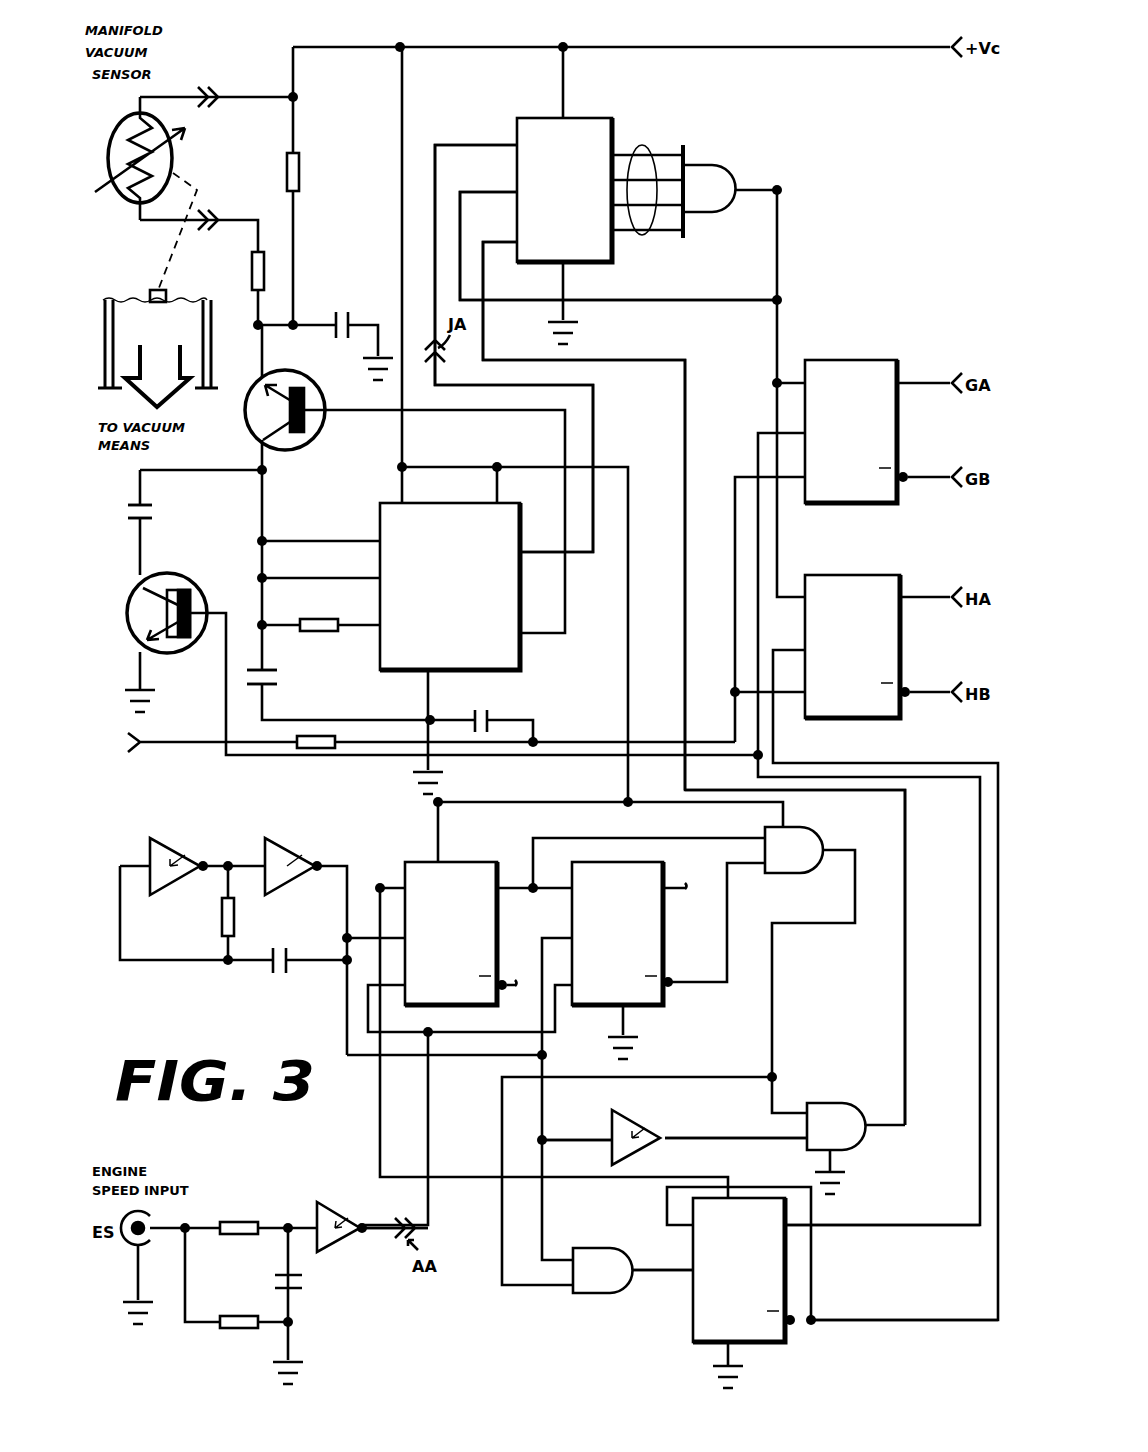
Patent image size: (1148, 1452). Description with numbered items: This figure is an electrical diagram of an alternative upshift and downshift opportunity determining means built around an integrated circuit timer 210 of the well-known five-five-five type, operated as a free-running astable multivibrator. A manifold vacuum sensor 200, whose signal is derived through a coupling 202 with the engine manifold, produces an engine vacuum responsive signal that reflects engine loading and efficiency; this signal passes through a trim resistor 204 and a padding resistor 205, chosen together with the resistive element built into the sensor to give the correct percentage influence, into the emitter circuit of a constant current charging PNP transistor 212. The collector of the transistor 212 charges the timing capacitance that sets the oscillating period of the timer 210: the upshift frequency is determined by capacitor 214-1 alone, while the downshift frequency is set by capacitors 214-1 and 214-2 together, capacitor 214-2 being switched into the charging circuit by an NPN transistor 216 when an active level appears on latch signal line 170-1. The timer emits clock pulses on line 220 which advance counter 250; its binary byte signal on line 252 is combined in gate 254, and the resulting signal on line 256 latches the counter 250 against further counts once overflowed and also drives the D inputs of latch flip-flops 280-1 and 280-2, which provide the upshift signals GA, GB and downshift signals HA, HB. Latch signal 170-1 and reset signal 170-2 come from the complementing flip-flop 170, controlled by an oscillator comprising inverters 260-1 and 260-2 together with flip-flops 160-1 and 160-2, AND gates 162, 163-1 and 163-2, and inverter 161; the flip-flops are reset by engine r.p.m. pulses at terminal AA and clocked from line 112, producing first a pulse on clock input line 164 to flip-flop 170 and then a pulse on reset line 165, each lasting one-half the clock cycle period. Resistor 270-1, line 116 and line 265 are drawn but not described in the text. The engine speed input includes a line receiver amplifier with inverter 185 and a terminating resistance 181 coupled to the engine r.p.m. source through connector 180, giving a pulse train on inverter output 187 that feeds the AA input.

The manifold vacuum sensor 200 is at (178, 165).
The padding resistor 205 is at (300, 178).
The trim resistor 204 is at (252, 282).
The coupling 202 is at (141, 308).
The constant current charging transistor 212 is at (320, 432).
The capacitor 214-2 is at (182, 505).
The NPN transistor 216 is at (190, 585).
The capacitor 214-1 is at (285, 698).
The timer 210 is at (465, 518).
The clock pulse line 220 is at (453, 140).
The counter 250 is at (571, 137).
The binary byte signal line 252 is at (650, 150).
The gate 254 is at (730, 180).
The signal line 256 is at (742, 298).
The reset line 265 is at (652, 365).
The latch flip-flop 280-1 is at (841, 391).
The latch flip-flop 280-2 is at (838, 606).
The resistor 270-1 is at (322, 758).
The inverter 260-1 is at (202, 835).
The inverter 260-2 is at (297, 858).
The flip-flop 160-1 is at (457, 888).
The flip-flop 160-2 is at (640, 881).
The AND gate 162 is at (814, 835).
The reset line 165 is at (906, 860).
The AND gate 163-2 is at (851, 1116).
The Q1 output 112 is at (590, 1092).
The inverter 161 is at (640, 1130).
The inverted clock line 116 is at (722, 1137).
The inverter 185 is at (338, 1218).
The inverter output 187 is at (385, 1235).
The connector 180 is at (124, 1252).
The terminating resistance 181 is at (235, 1320).
The AND gate 163-1 is at (613, 1250).
The clock input line 164 is at (668, 1275).
The flip-flop 170 is at (698, 1348).
The latch signal 170-1 is at (950, 1222).
The reset signal 170-2 is at (950, 1318).